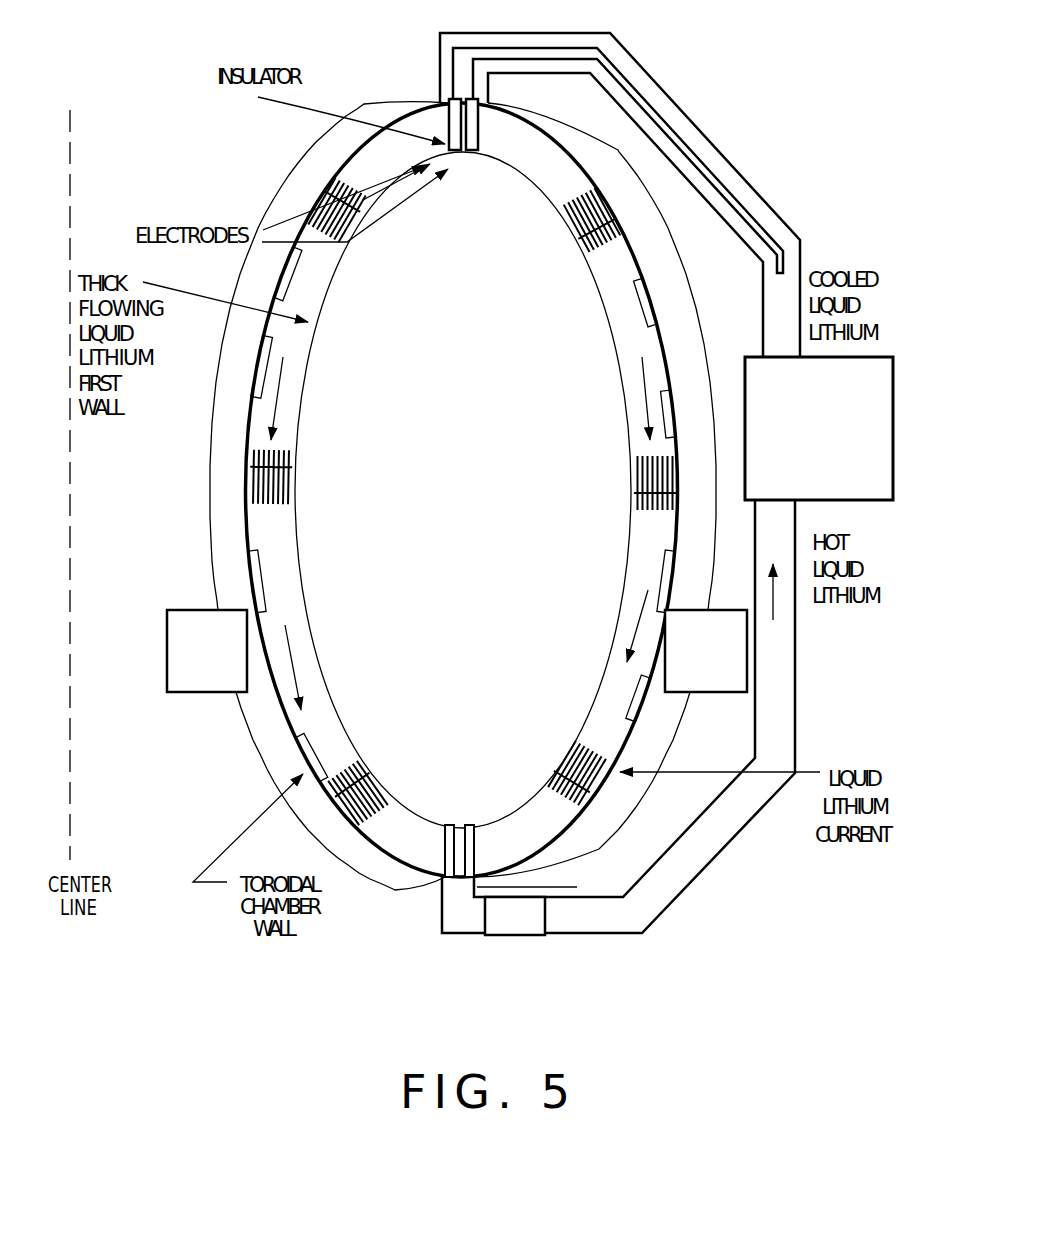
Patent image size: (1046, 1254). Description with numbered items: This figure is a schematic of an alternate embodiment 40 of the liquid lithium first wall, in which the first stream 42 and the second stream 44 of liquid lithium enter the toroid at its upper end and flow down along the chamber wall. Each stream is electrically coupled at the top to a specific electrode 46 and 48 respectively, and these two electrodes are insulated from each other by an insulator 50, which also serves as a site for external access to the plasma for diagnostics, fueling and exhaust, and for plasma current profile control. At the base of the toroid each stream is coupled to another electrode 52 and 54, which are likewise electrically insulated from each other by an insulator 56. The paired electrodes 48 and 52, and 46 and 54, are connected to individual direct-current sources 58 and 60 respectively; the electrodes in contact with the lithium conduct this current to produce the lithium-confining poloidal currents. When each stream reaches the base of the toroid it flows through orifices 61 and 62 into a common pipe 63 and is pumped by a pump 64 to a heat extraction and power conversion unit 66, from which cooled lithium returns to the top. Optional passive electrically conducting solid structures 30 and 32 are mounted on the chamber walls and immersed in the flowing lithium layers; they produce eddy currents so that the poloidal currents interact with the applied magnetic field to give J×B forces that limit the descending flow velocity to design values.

The passive electrical conducting solid structure 30 is at (650, 300).
The passive electrical conducting solid structure 32 is at (283, 262).
The alternate embodiment 40 is at (702, 58).
The first stream 42 is at (553, 163).
The second stream 44 is at (400, 135).
The electrode 46 is at (490, 110).
The electrode 48 is at (455, 98).
The insulator 50 is at (470, 152).
The electrode 52 is at (449, 822).
The electrode 54 is at (473, 825).
The insulator 56 is at (460, 825).
The current source 58 is at (192, 690).
The current source 60 is at (693, 690).
The orifice 61 is at (447, 893).
The orifice 62 is at (577, 887).
The common pipe 63 is at (467, 927).
The pump 64 is at (537, 935).
The heat extraction and power conversion unit 66 is at (882, 415).